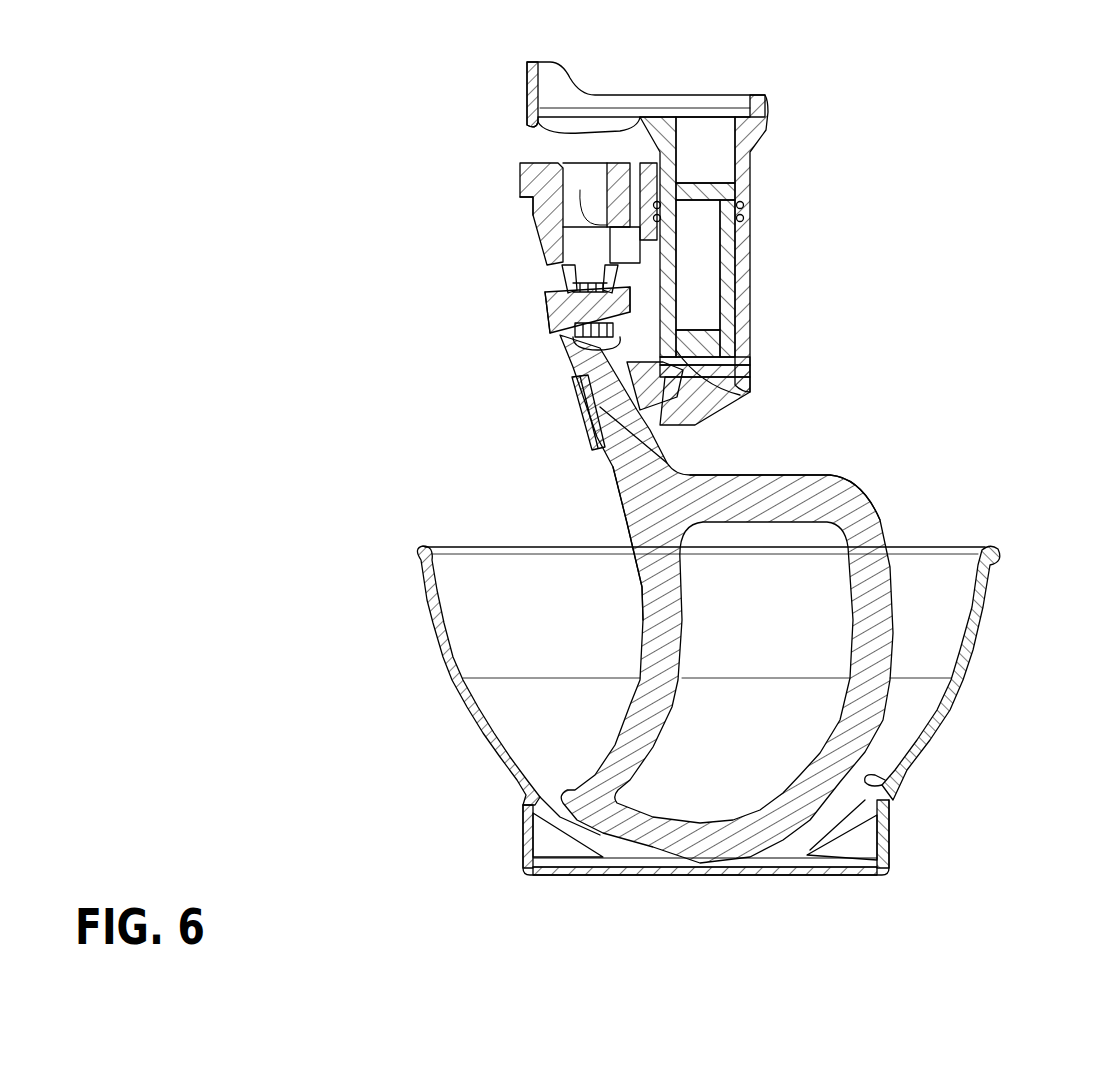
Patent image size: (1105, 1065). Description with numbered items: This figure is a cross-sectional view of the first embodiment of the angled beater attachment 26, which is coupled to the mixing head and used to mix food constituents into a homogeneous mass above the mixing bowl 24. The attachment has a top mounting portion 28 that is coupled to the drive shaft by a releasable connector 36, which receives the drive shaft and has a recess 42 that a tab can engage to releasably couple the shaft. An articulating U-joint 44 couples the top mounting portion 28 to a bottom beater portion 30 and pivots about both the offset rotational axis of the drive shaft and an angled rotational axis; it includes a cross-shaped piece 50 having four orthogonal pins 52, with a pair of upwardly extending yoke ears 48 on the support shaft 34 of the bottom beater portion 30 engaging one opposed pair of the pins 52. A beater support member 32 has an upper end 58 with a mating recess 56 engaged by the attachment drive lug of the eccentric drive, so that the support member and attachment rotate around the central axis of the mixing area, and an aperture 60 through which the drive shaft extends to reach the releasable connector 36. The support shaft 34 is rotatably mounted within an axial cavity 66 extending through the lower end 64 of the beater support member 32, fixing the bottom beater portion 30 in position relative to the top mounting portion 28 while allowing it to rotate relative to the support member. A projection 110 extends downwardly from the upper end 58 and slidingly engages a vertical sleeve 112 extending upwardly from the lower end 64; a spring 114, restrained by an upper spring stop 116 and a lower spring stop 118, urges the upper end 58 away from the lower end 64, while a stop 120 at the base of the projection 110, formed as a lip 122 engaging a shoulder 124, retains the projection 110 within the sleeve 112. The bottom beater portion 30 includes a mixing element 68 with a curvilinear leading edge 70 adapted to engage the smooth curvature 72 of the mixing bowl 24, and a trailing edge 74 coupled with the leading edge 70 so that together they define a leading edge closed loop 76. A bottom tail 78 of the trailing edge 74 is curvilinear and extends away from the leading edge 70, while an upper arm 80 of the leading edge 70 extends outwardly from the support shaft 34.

The mixing bowl 24 is at (957, 695).
The angled beater attachment 26 is at (522, 83).
The top mounting portion 28 is at (542, 235).
The bottom beater portion 30 is at (590, 478).
The beater support member 32 is at (746, 150).
The support shaft 34 is at (580, 403).
The releasable connector 36 is at (523, 190).
The recess 42 is at (580, 193).
The articulating U-joint 44 is at (538, 305).
The upwardly extending yoke ears 48 is at (560, 348).
The cross-shaped piece 50 is at (555, 278).
The pins 52 is at (553, 323).
The mating recess 56 is at (583, 97).
The upper end 58 is at (650, 117).
The aperture 60 is at (555, 133).
The lower end 64 is at (713, 410).
The axial cavity 66 is at (580, 410).
The mixing element 68 is at (531, 842).
The leading edge 70 is at (880, 593).
The smooth curvature 72 is at (900, 783).
The trailing edge 74 is at (653, 600).
The leading edge closed loop 76 is at (680, 845).
The bottom tail 78 is at (560, 795).
The upper arm 80 is at (807, 472).
The projection 110 is at (752, 267).
The vertical sleeve 112 is at (742, 292).
The spring 114 is at (752, 203).
The upper spring stop 116 is at (746, 177).
The lower spring stop 118 is at (752, 223).
The stop 120 is at (745, 363).
The lip 122 is at (745, 343).
The shoulder 124 is at (742, 373).